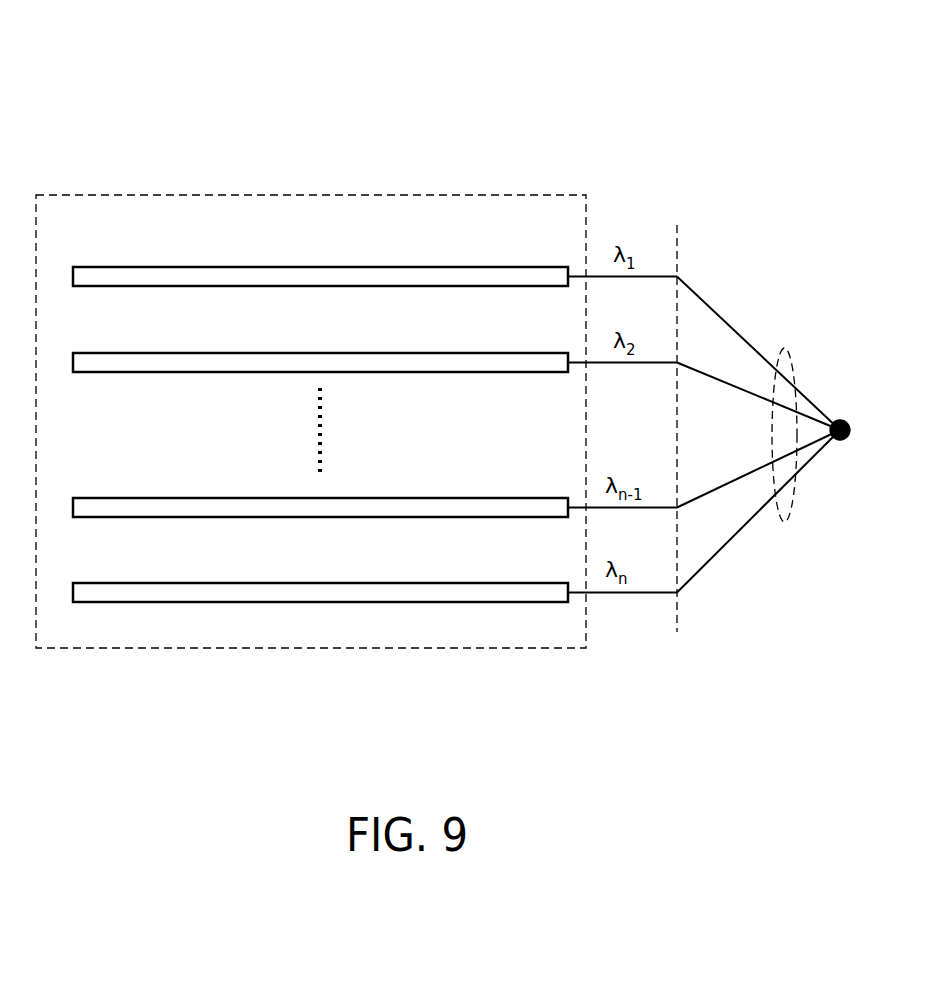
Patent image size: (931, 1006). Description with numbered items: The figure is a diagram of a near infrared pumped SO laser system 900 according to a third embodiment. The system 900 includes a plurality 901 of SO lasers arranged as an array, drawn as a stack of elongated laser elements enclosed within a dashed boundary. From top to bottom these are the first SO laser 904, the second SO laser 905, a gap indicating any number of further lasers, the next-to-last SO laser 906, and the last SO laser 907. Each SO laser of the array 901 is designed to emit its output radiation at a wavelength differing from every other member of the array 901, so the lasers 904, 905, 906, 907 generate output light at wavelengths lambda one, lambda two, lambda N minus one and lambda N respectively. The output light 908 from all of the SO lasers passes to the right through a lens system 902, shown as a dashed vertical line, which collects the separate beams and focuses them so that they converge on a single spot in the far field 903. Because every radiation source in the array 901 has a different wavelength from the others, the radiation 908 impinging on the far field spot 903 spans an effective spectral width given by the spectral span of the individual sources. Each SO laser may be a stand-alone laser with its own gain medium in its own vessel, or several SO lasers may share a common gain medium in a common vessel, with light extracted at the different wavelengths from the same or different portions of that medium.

The near infrared pumped SO laser system 900 is at (198, 63).
The plurality of SO lasers 901 is at (457, 193).
The lens system 902 is at (672, 476).
The far field spot 903 is at (839, 420).
The SO laser 1 904 is at (278, 267).
The SO laser 2 905 is at (283, 353).
The SO laser N-1 906 is at (290, 498).
The SO laser N 907 is at (282, 583).
The output light 908 is at (784, 348).